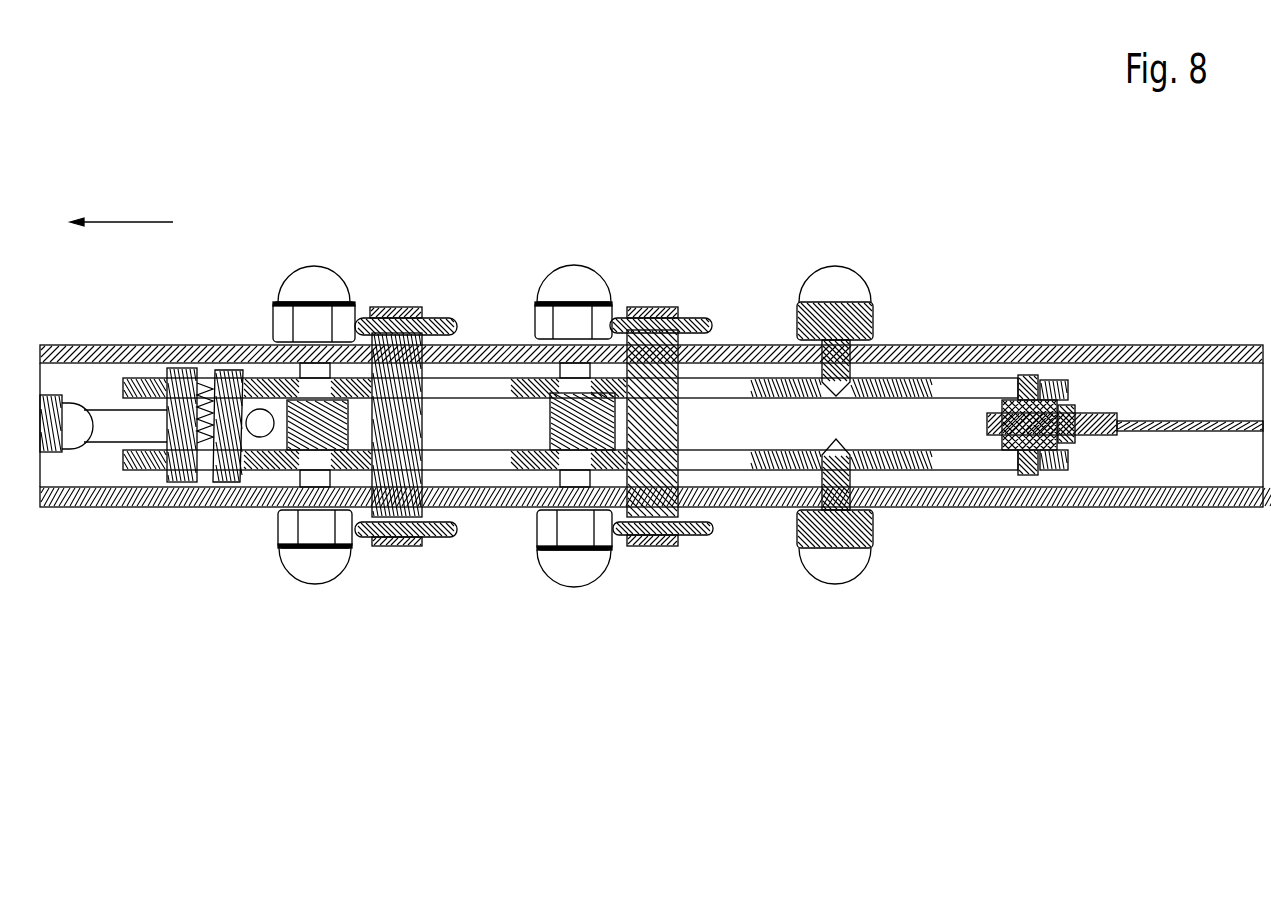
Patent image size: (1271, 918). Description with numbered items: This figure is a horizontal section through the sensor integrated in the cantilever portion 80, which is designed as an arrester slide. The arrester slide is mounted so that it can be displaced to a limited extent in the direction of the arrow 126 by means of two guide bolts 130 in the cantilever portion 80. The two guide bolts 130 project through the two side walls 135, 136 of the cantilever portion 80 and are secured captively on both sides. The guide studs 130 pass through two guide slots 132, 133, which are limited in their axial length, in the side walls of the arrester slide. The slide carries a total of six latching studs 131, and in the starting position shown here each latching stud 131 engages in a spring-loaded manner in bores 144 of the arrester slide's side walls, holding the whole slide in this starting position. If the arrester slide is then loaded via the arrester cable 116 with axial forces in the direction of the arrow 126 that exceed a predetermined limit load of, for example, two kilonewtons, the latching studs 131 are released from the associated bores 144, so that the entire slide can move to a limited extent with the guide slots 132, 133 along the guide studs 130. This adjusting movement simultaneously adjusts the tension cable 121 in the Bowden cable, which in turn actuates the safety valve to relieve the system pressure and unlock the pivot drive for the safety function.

The cantilever portion 80 is at (1072, 313).
The arrester cable 116 is at (125, 427).
The tension cable 121 is at (1158, 430).
The arrow 126 is at (130, 222).
The guide bolts 130 is at (385, 310).
The latching studs 131 is at (312, 285).
The guide slot 132 is at (472, 388).
The guide slot 133 is at (482, 462).
The side wall 135 is at (1213, 353).
The side wall 136 is at (1197, 500).
The bores 144 is at (898, 393).